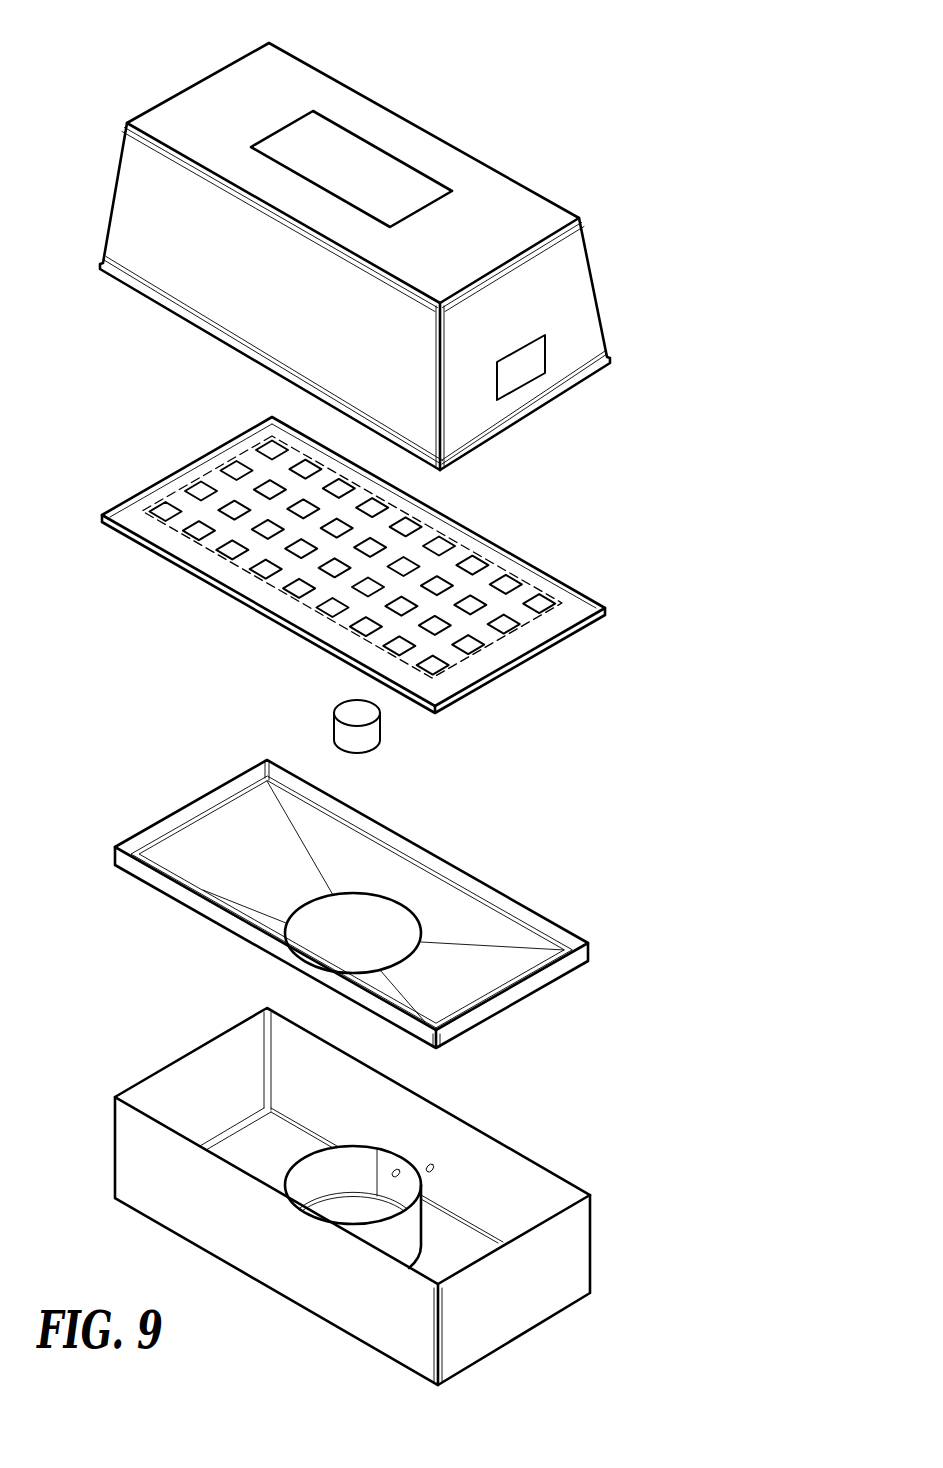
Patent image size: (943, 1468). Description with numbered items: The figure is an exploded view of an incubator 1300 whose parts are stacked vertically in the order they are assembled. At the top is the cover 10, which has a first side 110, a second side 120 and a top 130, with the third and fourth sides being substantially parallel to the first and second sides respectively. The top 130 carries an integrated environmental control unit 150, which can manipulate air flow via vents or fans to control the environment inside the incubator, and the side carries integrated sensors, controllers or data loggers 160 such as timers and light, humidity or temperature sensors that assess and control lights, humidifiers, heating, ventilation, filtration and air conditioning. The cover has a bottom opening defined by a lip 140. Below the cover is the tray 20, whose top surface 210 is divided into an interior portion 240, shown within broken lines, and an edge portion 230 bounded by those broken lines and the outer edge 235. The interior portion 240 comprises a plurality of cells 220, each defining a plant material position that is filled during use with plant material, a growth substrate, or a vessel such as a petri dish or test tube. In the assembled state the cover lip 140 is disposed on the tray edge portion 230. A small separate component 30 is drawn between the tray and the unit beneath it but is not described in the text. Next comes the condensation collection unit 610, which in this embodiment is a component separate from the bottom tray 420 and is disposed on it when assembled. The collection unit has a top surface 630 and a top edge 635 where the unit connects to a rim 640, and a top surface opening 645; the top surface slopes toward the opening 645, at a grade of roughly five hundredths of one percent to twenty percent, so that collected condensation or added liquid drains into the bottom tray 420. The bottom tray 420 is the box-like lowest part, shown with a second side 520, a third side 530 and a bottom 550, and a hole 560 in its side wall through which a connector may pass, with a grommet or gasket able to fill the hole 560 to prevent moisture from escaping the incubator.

The incubator 1300 is at (82, 36).
The cover 10 is at (372, 256).
The first side 110 is at (572, 272).
The second side 120 is at (145, 203).
The top 130 is at (497, 207).
The lip 140 is at (153, 297).
The integrated environmental control unit 150 is at (360, 167).
The integrated sensors/controllers/data loggers 160 is at (532, 364).
The tray 20 is at (401, 565).
The top surface 210 is at (152, 497).
The cell 220 is at (440, 548).
The edge portion 230 is at (482, 663).
The edge 235 is at (195, 567).
The interior portion 240 is at (455, 612).
The disc insert 30 is at (392, 732).
The condensation collection unit 610 is at (325, 904).
The top surface 630 is at (475, 925).
The top edge 635 is at (365, 836).
The rim 640 is at (440, 867).
The top surface opening 645 is at (414, 964).
The bottom tray 420 is at (378, 1200).
The second side 520 is at (548, 1298).
The third side 530 is at (210, 1228).
The bottom 550 is at (432, 1260).
The hole 560 is at (433, 1196).